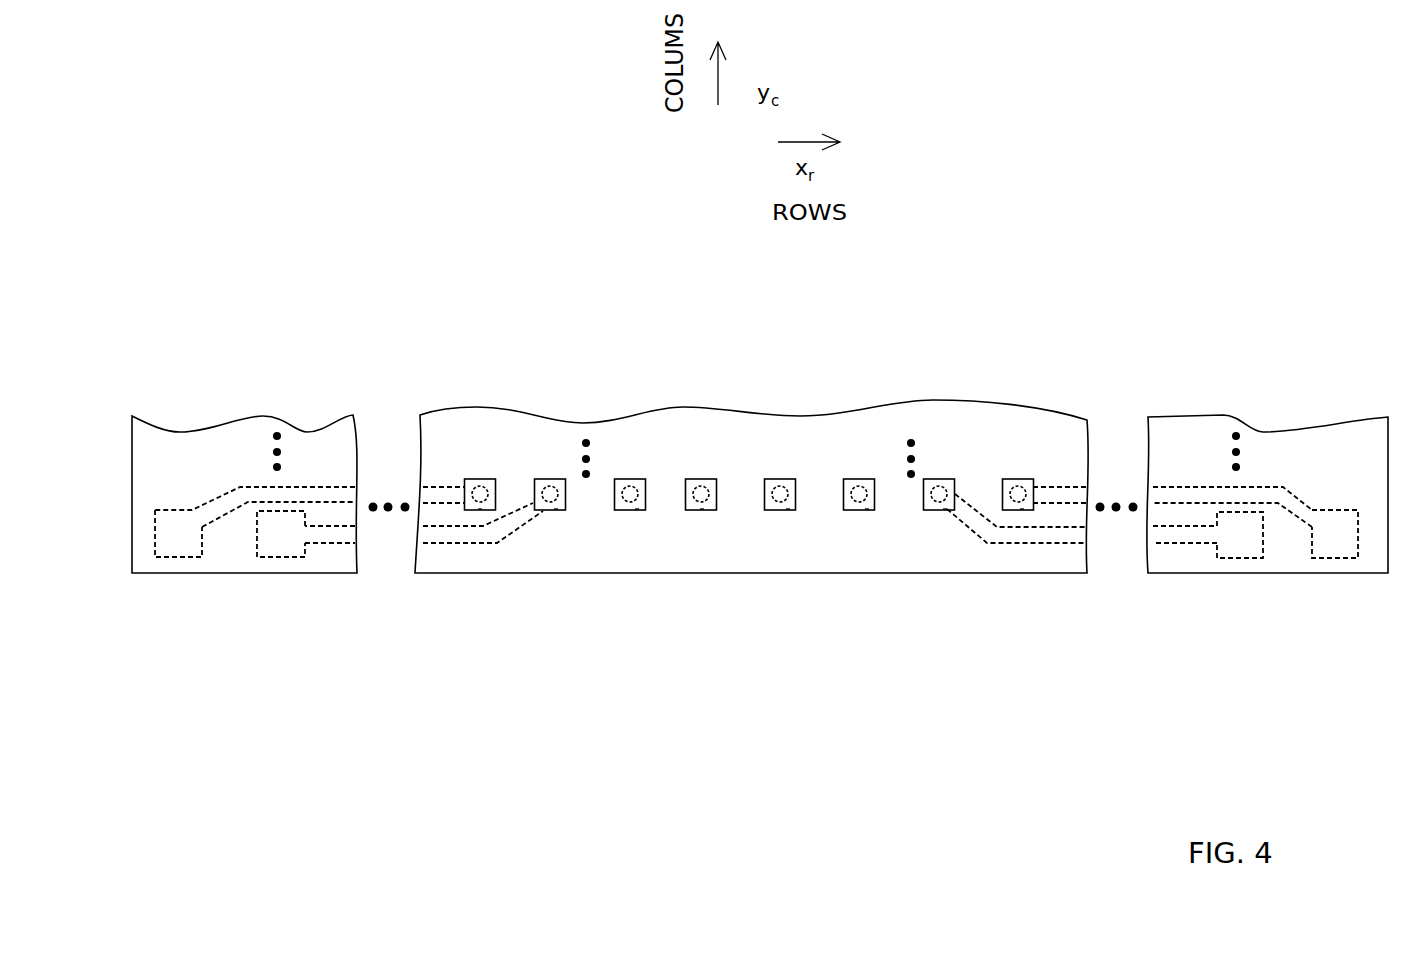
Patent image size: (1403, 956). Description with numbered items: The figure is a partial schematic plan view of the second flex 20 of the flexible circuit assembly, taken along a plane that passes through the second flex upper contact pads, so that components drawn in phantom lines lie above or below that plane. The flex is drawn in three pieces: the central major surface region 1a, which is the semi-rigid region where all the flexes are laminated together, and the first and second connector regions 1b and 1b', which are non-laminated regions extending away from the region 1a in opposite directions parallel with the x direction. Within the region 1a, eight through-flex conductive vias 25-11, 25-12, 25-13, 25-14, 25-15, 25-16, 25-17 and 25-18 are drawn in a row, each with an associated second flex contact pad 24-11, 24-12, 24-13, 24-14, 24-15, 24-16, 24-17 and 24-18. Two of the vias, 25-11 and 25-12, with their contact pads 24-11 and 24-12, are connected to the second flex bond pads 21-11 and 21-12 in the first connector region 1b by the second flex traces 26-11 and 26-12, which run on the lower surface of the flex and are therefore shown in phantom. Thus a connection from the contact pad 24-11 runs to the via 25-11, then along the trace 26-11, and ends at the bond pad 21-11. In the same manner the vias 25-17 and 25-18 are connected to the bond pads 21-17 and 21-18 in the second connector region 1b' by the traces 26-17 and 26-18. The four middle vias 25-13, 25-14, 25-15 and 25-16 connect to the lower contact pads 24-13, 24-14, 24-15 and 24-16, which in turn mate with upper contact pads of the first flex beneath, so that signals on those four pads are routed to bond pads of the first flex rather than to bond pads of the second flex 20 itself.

The second flex 20 is at (1269, 90).
The central major surface region 1a is at (1073, 747).
The first connector region 1b is at (244, 609).
The second connector region 1b' is at (1267, 610).
The second flex bond pad 21-11 is at (185, 557).
The second flex bond pad 21-12 is at (287, 557).
The second flex bond pad 21-17 is at (1236, 558).
The second flex bond pad 21-18 is at (1340, 558).
The second flex contact pad 24-11 is at (480, 509).
The second flex contact pad 24-12 is at (556, 509).
The lower second flex contact pad 24-13 is at (637, 509).
The lower second flex contact pad 24-14 is at (702, 509).
The lower second flex contact pad 24-15 is at (788, 509).
The lower second flex contact pad 24-16 is at (867, 509).
The second flex contact pad 24-17 is at (945, 509).
The second flex contact pad 24-18 is at (1022, 509).
The second flex via 25-11 is at (479, 492).
The second flex via 25-12 is at (550, 492).
The second flex via 25-13 is at (630, 492).
The second flex via 25-14 is at (701, 492).
The second flex via 25-15 is at (780, 492).
The second flex via 25-16 is at (859, 492).
The second flex via 25-17 is at (939, 492).
The second flex via 25-18 is at (1018, 492).
The second flex trace 26-11 is at (248, 487).
The second flex trace 26-12 is at (333, 543).
The second flex trace 26-17 is at (1073, 543).
The second flex trace 26-18 is at (1057, 487).